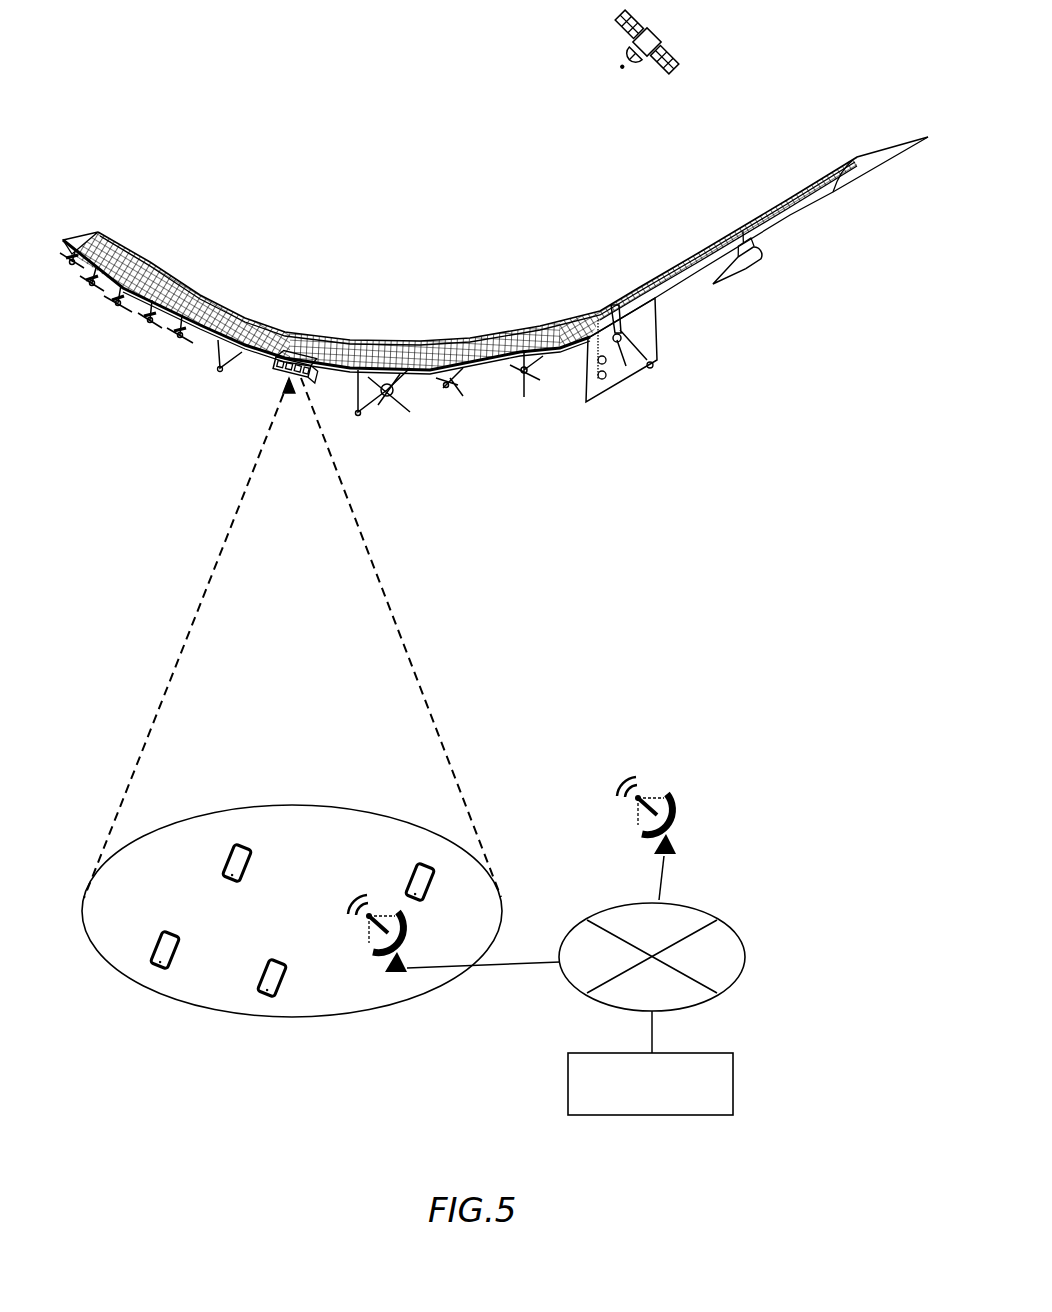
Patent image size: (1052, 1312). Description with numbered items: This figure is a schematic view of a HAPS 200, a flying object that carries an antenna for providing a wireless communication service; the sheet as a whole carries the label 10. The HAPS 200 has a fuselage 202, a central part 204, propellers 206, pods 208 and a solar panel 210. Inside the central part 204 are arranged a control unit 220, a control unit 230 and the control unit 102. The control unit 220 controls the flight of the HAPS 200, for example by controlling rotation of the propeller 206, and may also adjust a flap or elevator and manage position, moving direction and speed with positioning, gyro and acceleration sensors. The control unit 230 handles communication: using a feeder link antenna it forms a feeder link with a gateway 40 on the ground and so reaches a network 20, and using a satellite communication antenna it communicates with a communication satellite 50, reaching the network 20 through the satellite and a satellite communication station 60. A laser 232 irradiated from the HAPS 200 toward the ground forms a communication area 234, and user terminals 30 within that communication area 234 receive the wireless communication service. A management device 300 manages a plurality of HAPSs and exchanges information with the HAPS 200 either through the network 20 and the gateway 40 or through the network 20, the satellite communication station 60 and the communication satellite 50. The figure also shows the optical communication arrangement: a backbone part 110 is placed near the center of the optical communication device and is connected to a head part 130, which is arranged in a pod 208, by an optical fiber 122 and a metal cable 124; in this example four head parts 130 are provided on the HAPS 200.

The system 10 is at (132, 18).
The communication satellite 50 is at (664, 35).
The HAPS 200 is at (470, 626).
The fuselage 202 is at (62, 241).
The solar panel 210 is at (140, 270).
The backbone part 110 is at (318, 340).
The optical fiber 122 is at (487, 336).
The propeller 206 is at (740, 276).
The head part 130 is at (115, 302).
The central part 204 is at (274, 363).
The control unit 102 is at (306, 374).
The metal cable 124 is at (478, 370).
The pod 208 is at (378, 412).
The control unit 220 is at (285, 376).
The control unit 230 is at (295, 382).
The laser 232 is at (357, 512).
The communication area 234 is at (290, 805).
The user terminal 30 is at (246, 850).
The gateway 40 is at (408, 957).
The satellite communication station 60 is at (676, 800).
The network 20 is at (698, 910).
The management device 300 is at (692, 1054).